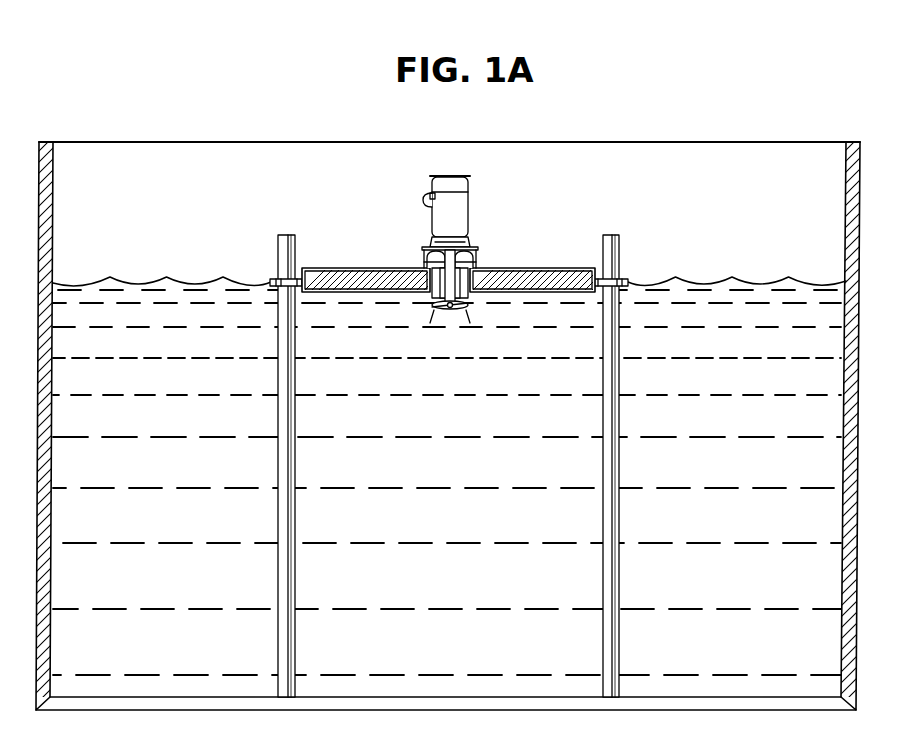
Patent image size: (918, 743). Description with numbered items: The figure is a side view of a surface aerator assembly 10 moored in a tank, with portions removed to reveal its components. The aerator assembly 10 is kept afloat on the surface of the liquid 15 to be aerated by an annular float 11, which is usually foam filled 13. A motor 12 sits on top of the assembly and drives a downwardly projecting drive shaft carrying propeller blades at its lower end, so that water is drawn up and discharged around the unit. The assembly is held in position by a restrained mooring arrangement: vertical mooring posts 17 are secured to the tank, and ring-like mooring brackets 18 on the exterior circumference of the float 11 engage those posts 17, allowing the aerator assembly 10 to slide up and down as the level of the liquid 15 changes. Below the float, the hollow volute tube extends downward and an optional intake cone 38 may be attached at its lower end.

The aerator assembly 10 is at (488, 217).
The annular float 11 is at (553, 268).
The motor 12 is at (470, 206).
The foam fill 13 is at (507, 268).
The liquid 15 is at (690, 281).
The vertical mooring posts 17 is at (285, 248).
The ring-like mooring brackets 18 is at (273, 281).
The intake cone 38 is at (478, 340).